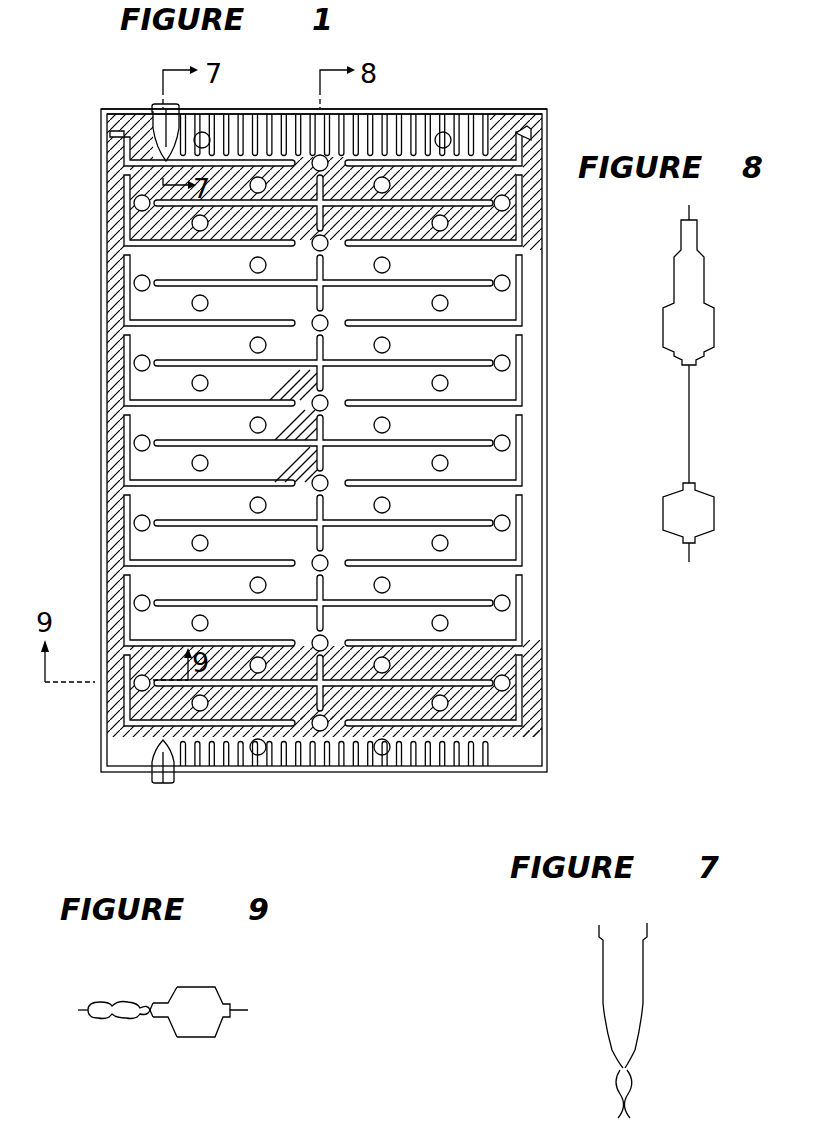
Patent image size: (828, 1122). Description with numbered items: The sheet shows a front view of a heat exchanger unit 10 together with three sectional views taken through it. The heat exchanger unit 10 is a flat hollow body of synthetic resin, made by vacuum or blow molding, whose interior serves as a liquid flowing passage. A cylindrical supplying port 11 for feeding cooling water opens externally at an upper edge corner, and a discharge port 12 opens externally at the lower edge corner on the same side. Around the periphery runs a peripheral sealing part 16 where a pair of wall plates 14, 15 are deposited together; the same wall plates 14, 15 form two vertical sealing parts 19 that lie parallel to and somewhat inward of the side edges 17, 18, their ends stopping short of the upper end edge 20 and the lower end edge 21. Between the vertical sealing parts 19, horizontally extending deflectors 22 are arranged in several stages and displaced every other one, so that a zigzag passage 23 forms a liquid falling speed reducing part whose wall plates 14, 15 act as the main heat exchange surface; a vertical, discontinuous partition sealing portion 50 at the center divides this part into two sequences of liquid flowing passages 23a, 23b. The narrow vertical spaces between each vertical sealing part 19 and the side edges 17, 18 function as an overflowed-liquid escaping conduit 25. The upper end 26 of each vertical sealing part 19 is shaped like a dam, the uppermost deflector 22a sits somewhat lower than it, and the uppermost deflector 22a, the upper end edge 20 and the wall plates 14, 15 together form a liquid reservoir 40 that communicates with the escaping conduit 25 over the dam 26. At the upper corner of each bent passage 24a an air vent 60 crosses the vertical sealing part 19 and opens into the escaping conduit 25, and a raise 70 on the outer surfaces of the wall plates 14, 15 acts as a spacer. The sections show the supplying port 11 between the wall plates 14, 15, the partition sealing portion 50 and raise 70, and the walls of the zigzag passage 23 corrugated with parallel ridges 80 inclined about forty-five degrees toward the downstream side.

In FIG. 1, the heat exchanger unit 10 is at (518, 96).
In FIG. 1, the supplying port 11 is at (162, 107).
In FIG. 7, the supplying port 11 is at (617, 979).
In FIG. 1, the discharge port 12 is at (163, 784).
In FIG. 8, the wall plate 14 is at (663, 332).
In FIG. 7, the wall plate 14 is at (603, 983).
In FIG. 9, the wall plate 14 is at (197, 987).
In FIG. 8, the wall plate 15 is at (714, 330).
In FIG. 7, the wall plate 15 is at (645, 975).
In FIG. 9, the wall plate 15 is at (197, 1037).
In FIG. 1, the peripheral sealing part 16 is at (548, 140).
In FIG. 1, the side edge 17 is at (106, 266).
In FIG. 9, the side edge 17 is at (85, 1010).
In FIG. 1, the side edge 18 is at (550, 423).
In FIG. 1, the vertical sealing part 19 is at (123, 295).
In FIG. 9, the vertical sealing part 19 is at (148, 1012).
In FIG. 1, the upper end edge 20 is at (541, 110).
In FIG. 1, the lower end edge 21 is at (447, 773).
In FIG. 1, the deflector 22 is at (167, 372).
In FIG. 1, the uppermost deflector 22a is at (420, 160).
In FIG. 1, the zigzag passage 23 is at (490, 545).
In FIG. 1, the liquid flowing passage 23a is at (226, 359).
In FIG. 1, the liquid flowing passage 23b is at (456, 359).
In FIG. 1, the bent passage 24a is at (127, 347).
In FIG. 1, the overflowed-liquid escaping conduit 25 is at (127, 440).
In FIG. 1, the upper end 26 is at (118, 134).
In FIG. 1, the liquid reservoir 40 is at (232, 143).
In FIG. 1, the partition sealing portion 50 is at (323, 500).
In FIG. 8, the partition sealing portion 50 is at (690, 448).
In FIG. 1, the air vent 60 is at (115, 167).
In FIG. 1, the raise 70 is at (502, 523).
In FIG. 8, the raise 70 is at (714, 515).
In FIG. 9, the raise 70 is at (170, 995).
In FIG. 1, the ridge 80 is at (497, 184).
In FIG. 7, the ridge 80 is at (630, 1097).